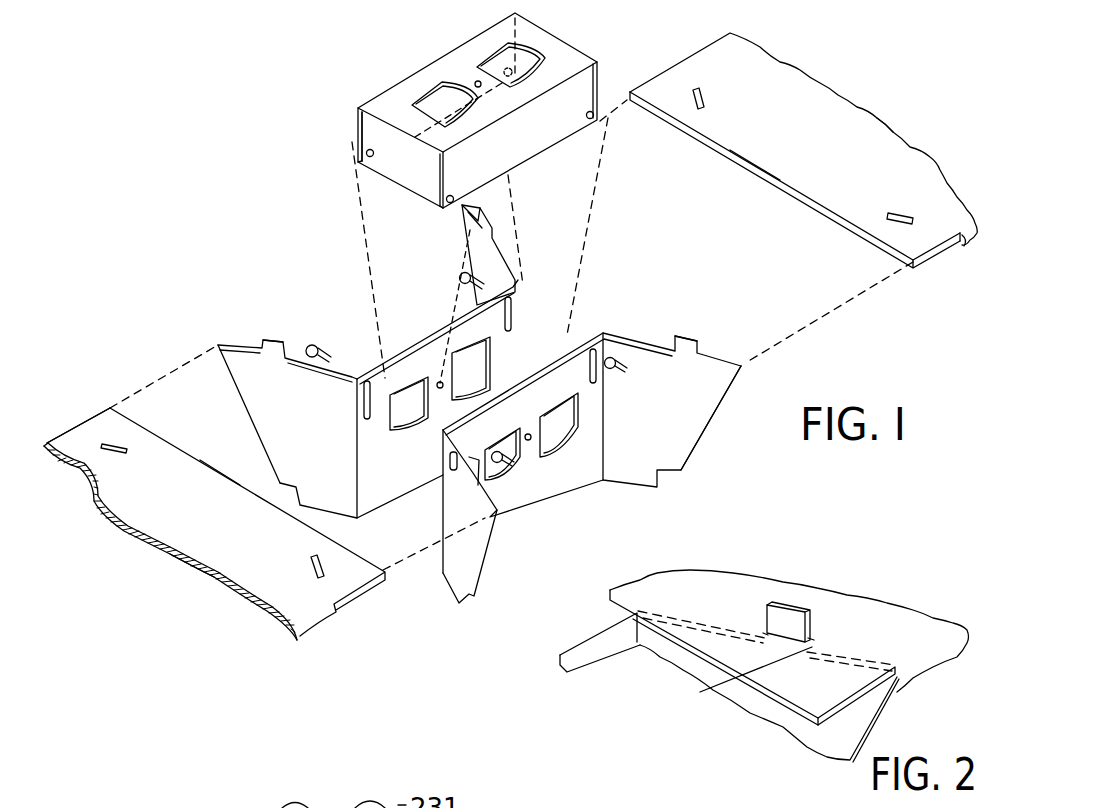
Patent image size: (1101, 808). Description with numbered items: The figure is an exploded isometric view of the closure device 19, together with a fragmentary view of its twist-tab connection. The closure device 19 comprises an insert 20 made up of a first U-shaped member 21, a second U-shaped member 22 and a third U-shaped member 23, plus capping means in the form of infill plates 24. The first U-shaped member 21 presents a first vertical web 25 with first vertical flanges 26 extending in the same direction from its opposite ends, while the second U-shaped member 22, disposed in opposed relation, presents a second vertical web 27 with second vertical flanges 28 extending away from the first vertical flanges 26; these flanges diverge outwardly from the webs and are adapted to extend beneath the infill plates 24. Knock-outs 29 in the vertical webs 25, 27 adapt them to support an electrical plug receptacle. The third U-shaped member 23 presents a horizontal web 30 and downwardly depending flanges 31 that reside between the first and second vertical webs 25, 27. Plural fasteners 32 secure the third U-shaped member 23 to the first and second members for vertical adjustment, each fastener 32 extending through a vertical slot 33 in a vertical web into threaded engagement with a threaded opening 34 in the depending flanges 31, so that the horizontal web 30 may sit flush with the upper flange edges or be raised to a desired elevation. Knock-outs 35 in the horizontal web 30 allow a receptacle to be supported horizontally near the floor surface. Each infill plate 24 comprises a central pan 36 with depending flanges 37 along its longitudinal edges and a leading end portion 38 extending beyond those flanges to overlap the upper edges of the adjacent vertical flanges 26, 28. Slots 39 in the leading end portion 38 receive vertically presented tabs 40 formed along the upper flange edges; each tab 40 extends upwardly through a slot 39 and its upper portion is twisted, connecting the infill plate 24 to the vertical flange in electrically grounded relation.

In FIG. 1, the closure device 19 is at (843, 60).
In FIG. 1, the insert 20 is at (343, 284).
In FIG. 1, the first U-shaped member 21 is at (712, 420).
In FIG. 1, the second U-shaped member 22 is at (223, 360).
In FIG. 1, the third U-shaped member 23 is at (388, 92).
In FIG. 1, the infill plate 24 is at (840, 92).
In FIG. 2, the infill plate 24 is at (872, 600).
In FIG. 1, the first vertical web 25 is at (530, 503).
In FIG. 1, the first vertical flange 26 is at (681, 440).
In FIG. 2, the first vertical flange 26 is at (770, 712).
In FIG. 1, the second vertical web 27 is at (432, 328).
In FIG. 1, the second vertical flange 28 is at (500, 256).
In FIG. 1, the knock-out 29 is at (403, 397).
In FIG. 1, the horizontal web 30 is at (543, 40).
In FIG. 1, the depending flange 31 is at (400, 140).
In FIG. 1, the fastener 32 is at (464, 276).
In FIG. 1, the vertical slot 33 is at (509, 312).
In FIG. 1, the threaded opening 34 is at (589, 115).
In FIG. 1, the knock-out 35 is at (450, 85).
In FIG. 1, the central pan 36 is at (878, 145).
In FIG. 1, the depending flange 37 is at (963, 247).
In FIG. 1, the leading end portion 38 is at (772, 178).
In FIG. 1, the slot 39 is at (705, 92).
In FIG. 2, the slot 39 is at (700, 691).
In FIG. 1, the vertically presented tab 40 is at (487, 218).
In FIG. 2, the vertically presented tab 40 is at (783, 605).